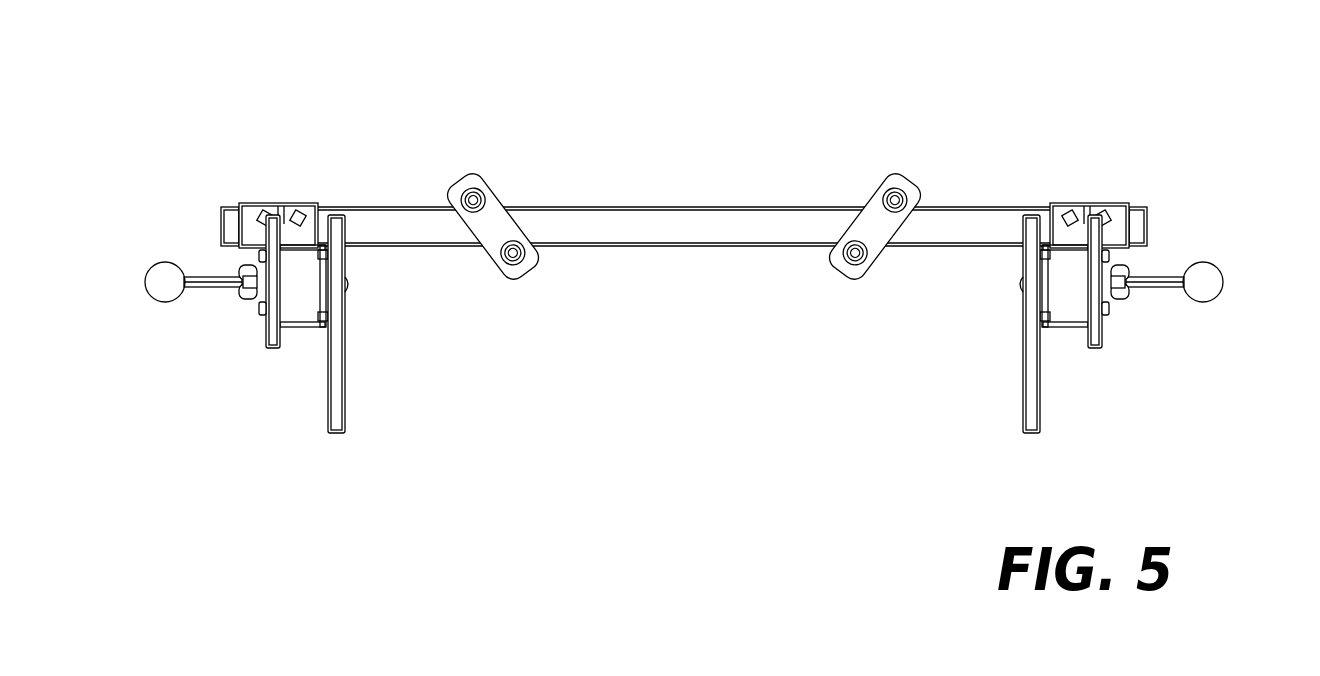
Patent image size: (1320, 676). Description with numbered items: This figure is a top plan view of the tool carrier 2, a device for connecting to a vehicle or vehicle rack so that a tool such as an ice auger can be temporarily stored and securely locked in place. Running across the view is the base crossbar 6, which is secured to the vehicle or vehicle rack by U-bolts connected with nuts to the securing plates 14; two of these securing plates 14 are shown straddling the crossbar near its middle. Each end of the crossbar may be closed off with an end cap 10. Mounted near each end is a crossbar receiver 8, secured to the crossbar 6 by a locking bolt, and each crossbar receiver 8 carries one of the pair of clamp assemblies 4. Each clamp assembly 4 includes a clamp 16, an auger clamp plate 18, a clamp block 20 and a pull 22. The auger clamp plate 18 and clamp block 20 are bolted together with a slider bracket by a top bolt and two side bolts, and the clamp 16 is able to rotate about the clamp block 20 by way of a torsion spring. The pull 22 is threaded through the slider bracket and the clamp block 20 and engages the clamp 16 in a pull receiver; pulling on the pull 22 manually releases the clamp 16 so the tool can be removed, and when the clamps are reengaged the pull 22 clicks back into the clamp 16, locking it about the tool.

The tool carrier 2 is at (196, 128).
The clamp assembly 4 is at (242, 409).
The base crossbar 6 is at (410, 205).
The crossbar receiver 8 is at (278, 203).
The end cap 10 is at (222, 215).
The securing plate 14 is at (492, 183).
The clamp 16 is at (345, 340).
The auger clamp plate 18 is at (266, 340).
The clamp block 20 is at (305, 328).
The pull 22 is at (165, 262).